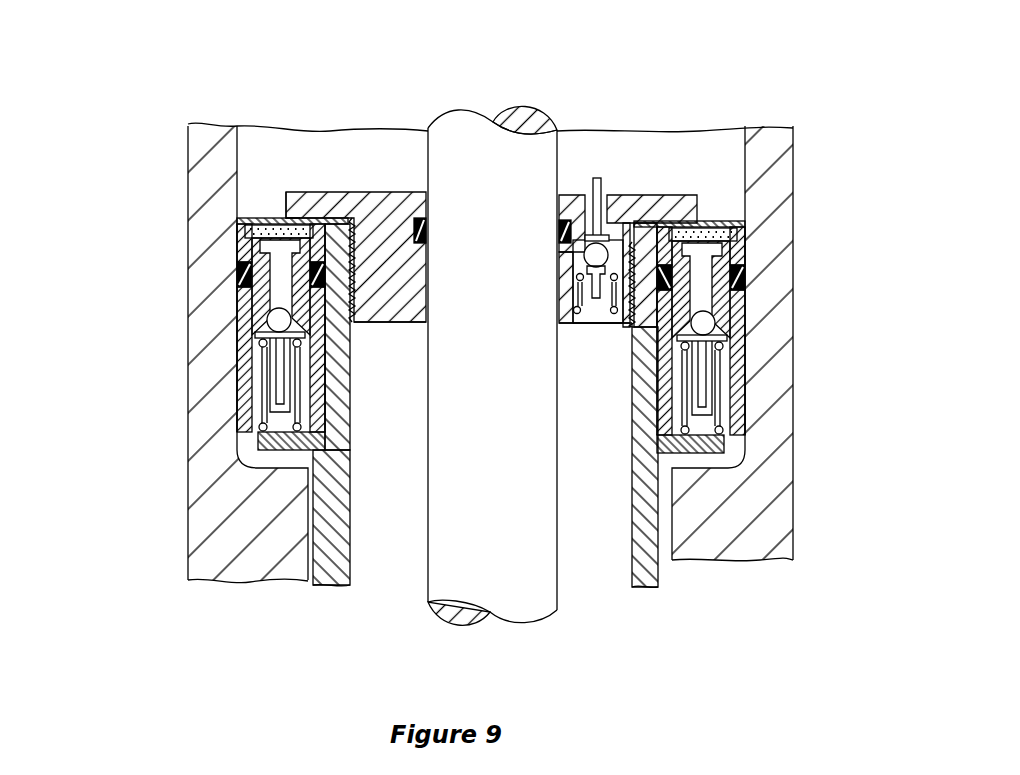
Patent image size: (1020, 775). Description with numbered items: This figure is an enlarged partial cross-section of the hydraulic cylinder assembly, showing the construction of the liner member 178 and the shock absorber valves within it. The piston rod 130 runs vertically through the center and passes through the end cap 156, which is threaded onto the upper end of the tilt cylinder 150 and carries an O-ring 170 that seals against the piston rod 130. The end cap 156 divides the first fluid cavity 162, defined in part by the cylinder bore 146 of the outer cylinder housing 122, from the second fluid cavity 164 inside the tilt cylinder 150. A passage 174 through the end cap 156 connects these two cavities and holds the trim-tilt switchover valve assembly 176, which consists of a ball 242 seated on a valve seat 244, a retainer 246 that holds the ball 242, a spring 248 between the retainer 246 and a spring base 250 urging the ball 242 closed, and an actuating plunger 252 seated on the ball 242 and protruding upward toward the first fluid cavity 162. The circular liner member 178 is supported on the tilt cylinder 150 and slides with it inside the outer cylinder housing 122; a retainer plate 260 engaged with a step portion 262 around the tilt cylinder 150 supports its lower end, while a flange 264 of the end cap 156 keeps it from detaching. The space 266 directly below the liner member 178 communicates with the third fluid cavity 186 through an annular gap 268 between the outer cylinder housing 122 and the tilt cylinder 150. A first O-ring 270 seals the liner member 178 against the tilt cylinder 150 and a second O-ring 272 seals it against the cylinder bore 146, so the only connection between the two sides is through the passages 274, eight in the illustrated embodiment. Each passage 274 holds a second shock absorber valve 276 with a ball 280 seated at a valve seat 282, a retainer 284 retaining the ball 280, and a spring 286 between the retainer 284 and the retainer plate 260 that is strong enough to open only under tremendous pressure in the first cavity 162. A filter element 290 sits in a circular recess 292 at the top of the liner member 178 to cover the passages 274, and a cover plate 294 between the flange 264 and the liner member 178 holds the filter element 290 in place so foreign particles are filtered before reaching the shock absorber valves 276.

The outer cylinder housing 122 is at (797, 158).
The piston rod 130 is at (528, 605).
The cylinder bore 146 is at (245, 148).
The tilt cylinder 150 is at (672, 575).
The end cap 156 is at (335, 227).
The first fluid cavity 162 is at (720, 153).
The second fluid cavity 164 is at (395, 572).
The O-ring 170 is at (440, 172).
The passage 174 is at (600, 327).
The trim-tilt switchover valve assembly 176 is at (615, 178).
The liner member 178 is at (759, 337).
The third fluid cavity 186 is at (195, 515).
The ball 242 is at (563, 255).
The valve seat 244 is at (577, 260).
The retainer 246 is at (594, 258).
The spring 248 is at (592, 290).
The spring base 250 is at (595, 300).
The actuating plunger 252 is at (597, 178).
The retainer plate 260 is at (255, 452).
The step portion 262 is at (325, 443).
The flange 264 is at (297, 200).
The space 266 is at (252, 476).
The gap 268 is at (325, 510).
The first O-ring 270 is at (740, 280).
The second O-ring 272 is at (367, 293).
The passages 274 is at (209, 324).
The second shock absorber valve 276 is at (243, 386).
The ball 280 is at (270, 322).
The valve seat 282 is at (272, 250).
The retainer 284 is at (280, 358).
The spring 286 is at (265, 410).
The filter element 290 is at (262, 208).
The circular recess 292 is at (349, 226).
The cover plate 294 is at (247, 219).